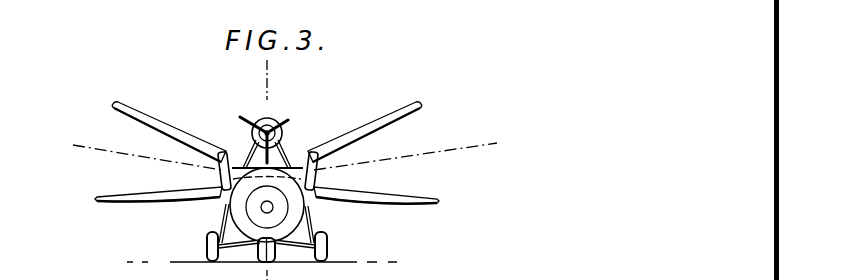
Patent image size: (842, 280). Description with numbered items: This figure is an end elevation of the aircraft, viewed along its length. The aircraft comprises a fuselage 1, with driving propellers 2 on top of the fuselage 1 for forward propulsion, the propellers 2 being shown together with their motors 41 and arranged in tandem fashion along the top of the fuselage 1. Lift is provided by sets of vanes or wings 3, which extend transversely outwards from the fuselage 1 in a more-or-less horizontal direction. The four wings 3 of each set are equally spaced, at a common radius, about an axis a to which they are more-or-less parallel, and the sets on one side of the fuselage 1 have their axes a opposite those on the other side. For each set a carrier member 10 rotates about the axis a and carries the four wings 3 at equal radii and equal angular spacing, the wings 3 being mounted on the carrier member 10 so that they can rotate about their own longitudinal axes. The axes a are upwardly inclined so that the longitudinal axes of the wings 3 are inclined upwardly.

The fuselage 1 is at (303, 200).
The driving propeller 2 is at (287, 120).
The wing 3 is at (153, 127).
The carrier member 10 is at (220, 172).
The motor 41 is at (258, 118).
The axis a is at (283, 147).